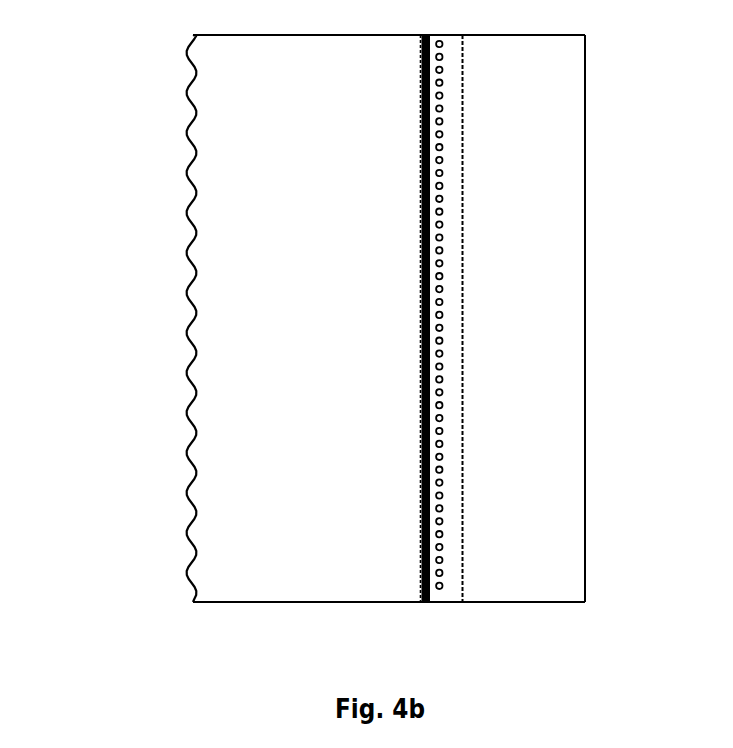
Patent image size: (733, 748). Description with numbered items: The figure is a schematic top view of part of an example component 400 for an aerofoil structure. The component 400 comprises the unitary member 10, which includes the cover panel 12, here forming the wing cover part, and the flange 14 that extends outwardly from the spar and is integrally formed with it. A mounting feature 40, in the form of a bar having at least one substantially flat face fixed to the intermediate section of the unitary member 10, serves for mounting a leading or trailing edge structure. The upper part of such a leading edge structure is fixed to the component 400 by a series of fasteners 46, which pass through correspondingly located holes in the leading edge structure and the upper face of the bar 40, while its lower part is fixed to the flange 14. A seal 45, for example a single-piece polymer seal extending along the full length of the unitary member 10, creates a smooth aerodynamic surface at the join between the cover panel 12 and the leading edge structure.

The component 400 is at (118, 164).
The unitary member 10 is at (333, 174).
The cover panel 12 is at (235, 302).
The flange 14 is at (518, 260).
The mounting feature 40 is at (448, 112).
The seal 45 is at (442, 476).
The fasteners 46 is at (445, 187).